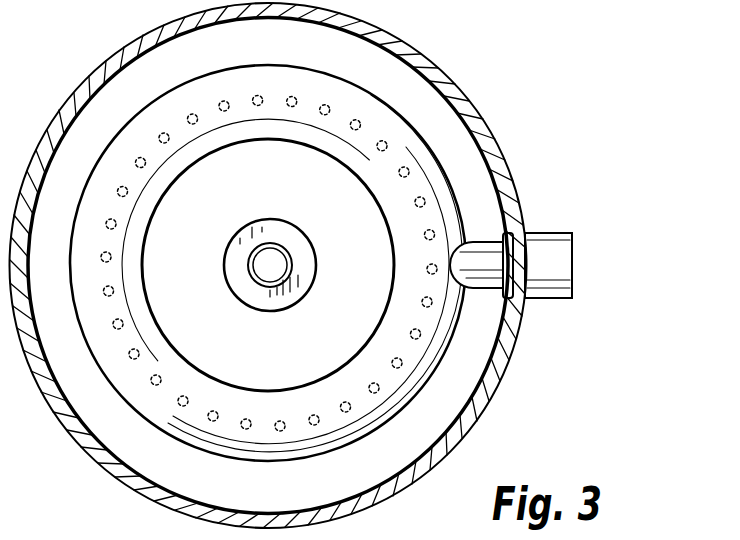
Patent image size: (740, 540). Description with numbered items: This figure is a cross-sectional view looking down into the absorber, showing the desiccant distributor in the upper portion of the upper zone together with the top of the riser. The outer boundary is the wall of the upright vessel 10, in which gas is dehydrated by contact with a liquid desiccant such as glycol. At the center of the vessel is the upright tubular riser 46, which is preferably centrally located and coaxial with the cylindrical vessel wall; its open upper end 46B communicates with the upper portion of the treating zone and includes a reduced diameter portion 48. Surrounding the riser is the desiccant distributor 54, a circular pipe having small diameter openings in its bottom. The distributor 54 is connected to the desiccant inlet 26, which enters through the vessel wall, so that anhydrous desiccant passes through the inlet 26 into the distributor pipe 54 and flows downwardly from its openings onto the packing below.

The upright vessel 10 is at (440, 72).
The desiccant inlet 26 is at (570, 253).
The upright tubular riser 46 is at (263, 313).
The upper end of the riser 46B is at (282, 263).
The reduced diameter portion 48 is at (242, 262).
The desiccant distributor 54 is at (367, 168).